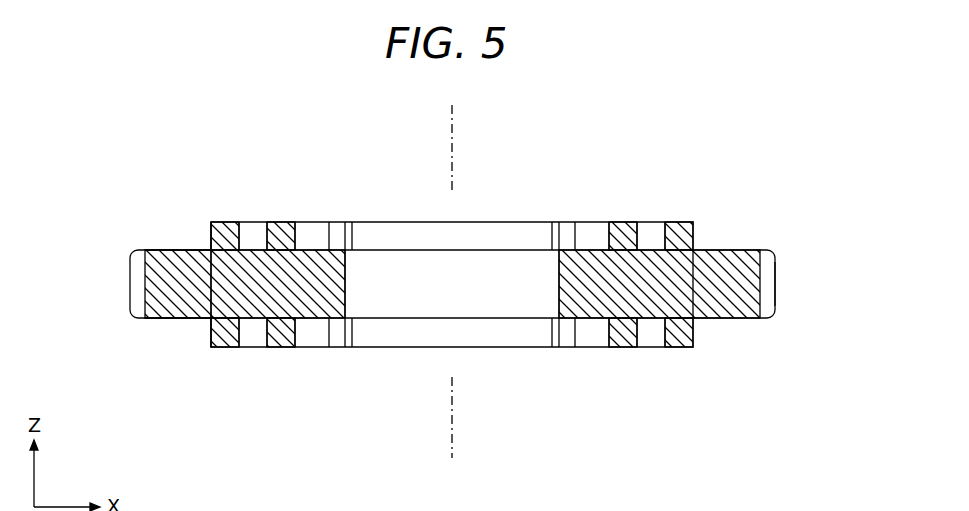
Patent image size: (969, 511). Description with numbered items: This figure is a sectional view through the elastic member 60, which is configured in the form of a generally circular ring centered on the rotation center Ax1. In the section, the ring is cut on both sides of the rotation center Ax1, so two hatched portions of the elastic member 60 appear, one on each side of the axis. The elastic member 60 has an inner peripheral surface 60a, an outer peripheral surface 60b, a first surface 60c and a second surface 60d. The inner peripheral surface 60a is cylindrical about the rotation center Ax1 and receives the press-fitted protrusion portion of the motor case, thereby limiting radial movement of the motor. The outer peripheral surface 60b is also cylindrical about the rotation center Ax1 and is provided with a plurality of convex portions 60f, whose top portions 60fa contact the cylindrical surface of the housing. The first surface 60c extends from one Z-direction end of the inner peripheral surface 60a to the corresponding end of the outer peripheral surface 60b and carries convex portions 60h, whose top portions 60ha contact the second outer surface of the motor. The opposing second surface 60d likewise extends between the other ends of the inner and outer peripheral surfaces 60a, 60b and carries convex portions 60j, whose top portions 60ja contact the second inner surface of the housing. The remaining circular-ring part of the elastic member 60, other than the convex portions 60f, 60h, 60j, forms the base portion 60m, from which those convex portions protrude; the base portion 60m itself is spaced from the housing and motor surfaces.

The elastic member 60 is at (799, 164).
The inner peripheral surface 60a is at (348, 282).
The outer peripheral surface 60b is at (775, 270).
The first surface 60c is at (175, 250).
The second surface 60d is at (178, 318).
The top portion 60fa is at (129, 282).
The convex portion 60f is at (452, 296).
The top portion 60ha is at (278, 223).
The convex portion 60h is at (452, 184).
The top portion 60ja is at (278, 347).
The convex portion 60j is at (452, 389).
The base portion 60m is at (483, 289).
The rotation center Ax1 is at (455, 430).